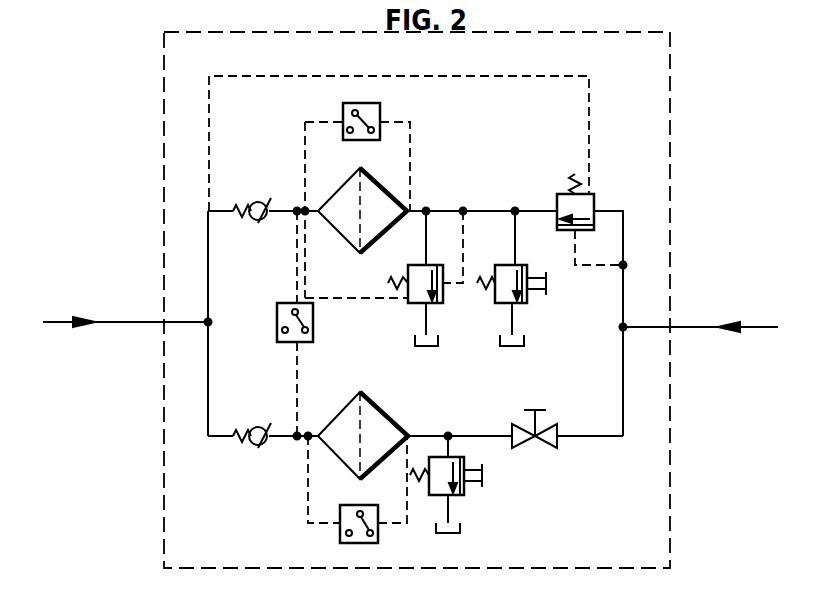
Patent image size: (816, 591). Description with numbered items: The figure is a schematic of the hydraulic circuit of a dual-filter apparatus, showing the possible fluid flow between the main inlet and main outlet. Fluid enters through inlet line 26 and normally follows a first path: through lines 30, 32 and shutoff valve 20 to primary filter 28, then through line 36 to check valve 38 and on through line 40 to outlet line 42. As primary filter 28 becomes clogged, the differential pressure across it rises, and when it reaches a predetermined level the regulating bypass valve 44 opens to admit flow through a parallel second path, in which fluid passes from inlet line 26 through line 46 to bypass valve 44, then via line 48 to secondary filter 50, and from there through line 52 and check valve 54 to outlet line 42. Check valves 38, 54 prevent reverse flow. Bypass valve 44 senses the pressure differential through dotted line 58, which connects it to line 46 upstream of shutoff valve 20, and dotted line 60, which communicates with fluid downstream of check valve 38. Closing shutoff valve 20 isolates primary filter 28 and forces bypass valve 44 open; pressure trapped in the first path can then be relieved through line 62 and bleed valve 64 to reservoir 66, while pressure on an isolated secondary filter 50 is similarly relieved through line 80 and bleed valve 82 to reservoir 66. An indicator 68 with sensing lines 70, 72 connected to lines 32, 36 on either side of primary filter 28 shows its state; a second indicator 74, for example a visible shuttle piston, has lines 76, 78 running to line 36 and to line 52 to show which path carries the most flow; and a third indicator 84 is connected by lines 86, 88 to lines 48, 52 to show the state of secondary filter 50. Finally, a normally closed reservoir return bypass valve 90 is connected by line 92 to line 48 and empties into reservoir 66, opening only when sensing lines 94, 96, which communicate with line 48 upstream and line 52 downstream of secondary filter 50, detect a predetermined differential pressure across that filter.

The shutoff valve 20 is at (521, 423).
The inlet line 26 is at (704, 331).
The primary filter 28 is at (349, 417).
The line 30 is at (592, 435).
The line 32 is at (483, 437).
The line 36 is at (289, 410).
The check valve 38 is at (257, 426).
The line 40 is at (209, 352).
The outlet line 42 is at (144, 324).
The regulating bypass valve 44 is at (587, 204).
The line 46 is at (624, 306).
The line 48 is at (504, 200).
The secondary filter 50 is at (366, 172).
The line 52 is at (271, 205).
The check valve 54 is at (256, 202).
The dotted line 58 is at (616, 258).
The dotted line 60 is at (530, 78).
The line 62 is at (439, 436).
The bleed valve 64 is at (450, 494).
The reservoir 66 is at (412, 342).
The indicator 68 is at (340, 534).
The sensing line 70 is at (398, 523).
The sensing line 72 is at (308, 485).
The second indicator 74 is at (280, 320).
The line 76 is at (297, 379).
The line 78 is at (296, 250).
The line 80 is at (514, 241).
The bleed valve 82 is at (551, 250).
The third indicator 84 is at (373, 104).
The line 86 is at (304, 123).
The line 88 is at (412, 139).
The reservoir return bypass valve 90 is at (410, 268).
The line 92 is at (421, 217).
The sensing line 94 is at (461, 287).
The sensing line 96 is at (362, 297).